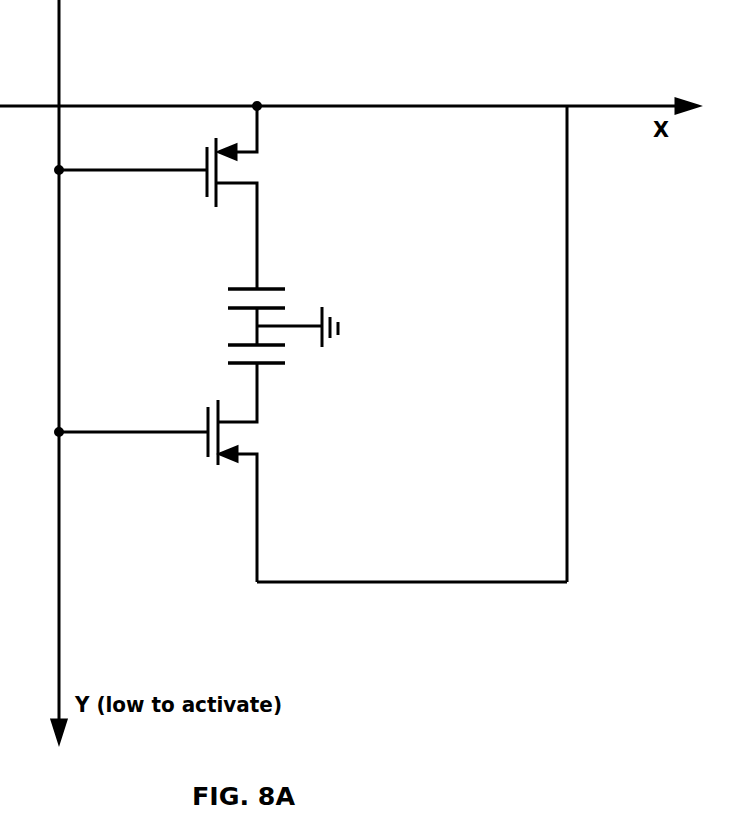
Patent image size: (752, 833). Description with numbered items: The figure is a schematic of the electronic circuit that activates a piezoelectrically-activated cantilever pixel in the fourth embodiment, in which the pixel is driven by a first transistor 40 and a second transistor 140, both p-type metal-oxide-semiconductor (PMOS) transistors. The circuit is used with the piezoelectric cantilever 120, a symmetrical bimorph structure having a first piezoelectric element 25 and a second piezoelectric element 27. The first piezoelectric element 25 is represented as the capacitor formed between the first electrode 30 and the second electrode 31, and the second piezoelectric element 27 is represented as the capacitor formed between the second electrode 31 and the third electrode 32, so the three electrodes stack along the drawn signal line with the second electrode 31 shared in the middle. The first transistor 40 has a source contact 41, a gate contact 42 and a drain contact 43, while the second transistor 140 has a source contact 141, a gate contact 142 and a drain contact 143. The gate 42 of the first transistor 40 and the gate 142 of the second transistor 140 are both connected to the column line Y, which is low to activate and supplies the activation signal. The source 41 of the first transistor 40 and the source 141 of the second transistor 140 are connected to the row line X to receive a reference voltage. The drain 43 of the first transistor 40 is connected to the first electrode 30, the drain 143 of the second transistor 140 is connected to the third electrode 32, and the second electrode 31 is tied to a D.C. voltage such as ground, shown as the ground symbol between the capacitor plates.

The first transistor 40 is at (312, 303).
The source contact 41 is at (257, 130).
The gate contact 42 is at (178, 170).
The drain contact 43 is at (257, 235).
The piezoelectric cantilever 120 is at (227, 323).
The first piezoelectric element 25 is at (305, 292).
The second piezoelectric element 27 is at (305, 357).
The first electrode 30 is at (245, 289).
The second electrode 31 is at (247, 345).
The third electrode 32 is at (230, 381).
The second transistor 140 is at (288, 472).
The source contact 141 is at (257, 470).
The gate contact 142 is at (183, 434).
The drain contact 143 is at (257, 396).